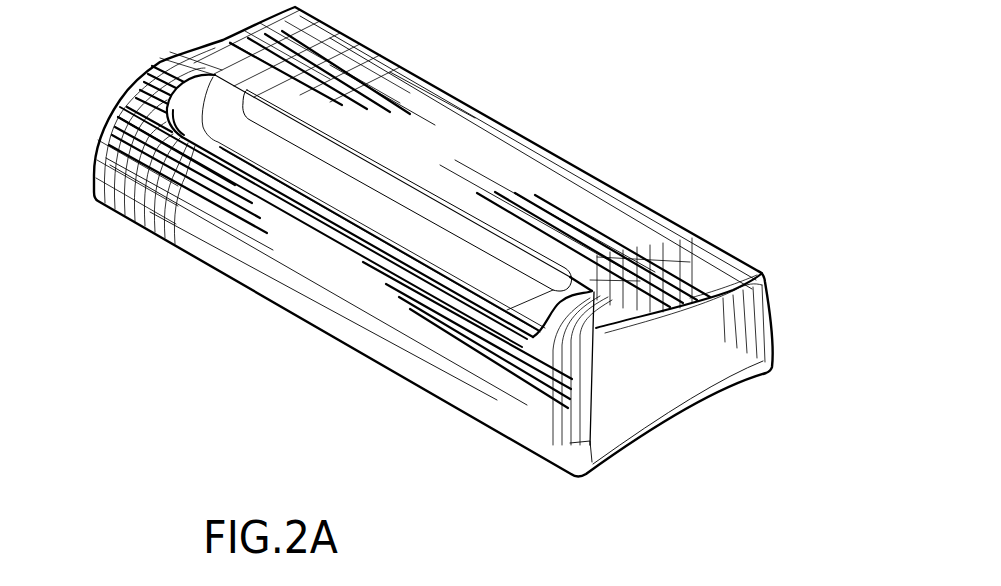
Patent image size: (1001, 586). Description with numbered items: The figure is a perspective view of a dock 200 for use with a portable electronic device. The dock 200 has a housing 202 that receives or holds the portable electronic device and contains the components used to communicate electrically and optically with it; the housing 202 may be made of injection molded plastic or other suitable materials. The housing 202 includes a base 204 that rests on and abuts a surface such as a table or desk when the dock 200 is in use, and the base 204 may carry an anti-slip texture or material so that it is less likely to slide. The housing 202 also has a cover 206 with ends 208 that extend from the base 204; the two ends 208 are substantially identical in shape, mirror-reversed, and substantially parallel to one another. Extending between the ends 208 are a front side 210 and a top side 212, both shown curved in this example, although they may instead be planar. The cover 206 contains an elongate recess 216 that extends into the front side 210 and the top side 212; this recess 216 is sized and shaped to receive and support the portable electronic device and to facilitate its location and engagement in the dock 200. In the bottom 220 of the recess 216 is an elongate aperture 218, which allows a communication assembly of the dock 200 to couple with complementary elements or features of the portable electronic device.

The dock 200 is at (632, 524).
The housing 202 is at (762, 274).
The base 204 is at (387, 372).
The cover 206 is at (600, 192).
The ends 208 is at (163, 62).
The front side 210 is at (233, 238).
The top side 212 is at (308, 57).
The elongate recess 216 is at (377, 200).
The elongate aperture 218 is at (480, 302).
The bottom of the recess 220 is at (343, 228).